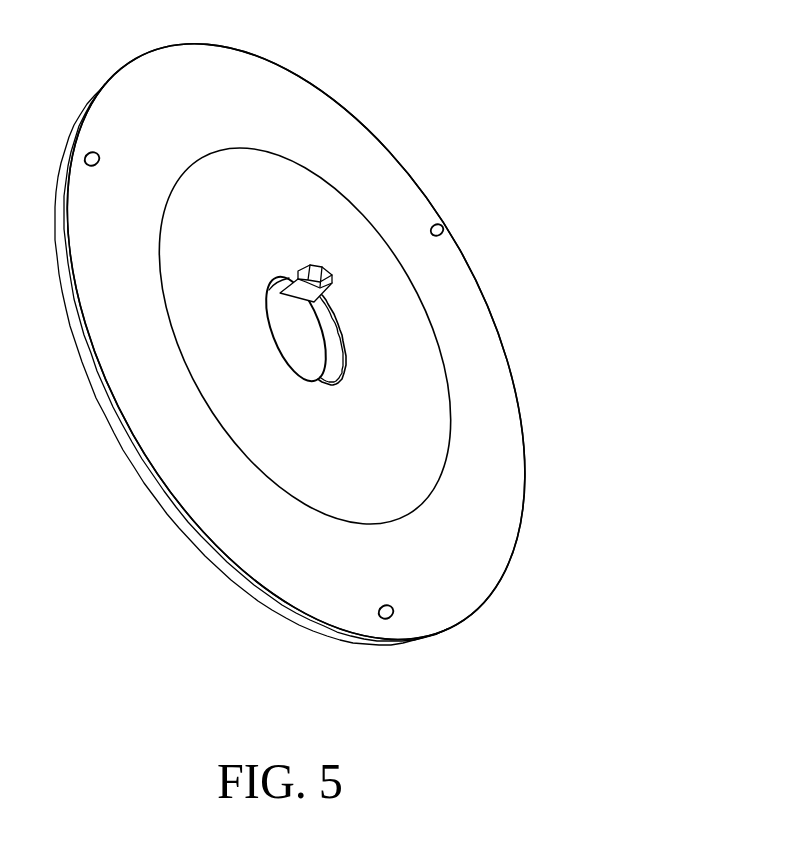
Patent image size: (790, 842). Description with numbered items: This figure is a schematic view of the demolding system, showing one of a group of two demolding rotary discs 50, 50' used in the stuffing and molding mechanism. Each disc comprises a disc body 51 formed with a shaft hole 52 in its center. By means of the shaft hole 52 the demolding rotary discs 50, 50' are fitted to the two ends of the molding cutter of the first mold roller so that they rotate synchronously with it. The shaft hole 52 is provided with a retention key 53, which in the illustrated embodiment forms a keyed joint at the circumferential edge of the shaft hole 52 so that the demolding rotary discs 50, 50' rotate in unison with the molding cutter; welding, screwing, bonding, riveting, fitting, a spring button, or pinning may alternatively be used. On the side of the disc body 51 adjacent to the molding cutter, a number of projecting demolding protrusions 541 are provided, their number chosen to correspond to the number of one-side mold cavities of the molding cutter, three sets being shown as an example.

The demolding rotary disc 50 is at (371, 364).
The demolding rotary disc 50' is at (310, 358).
The disc body 51 is at (502, 436).
The shaft hole 52 is at (345, 353).
The retention key 53 is at (318, 269).
The demolding protrusion 541 is at (443, 228).